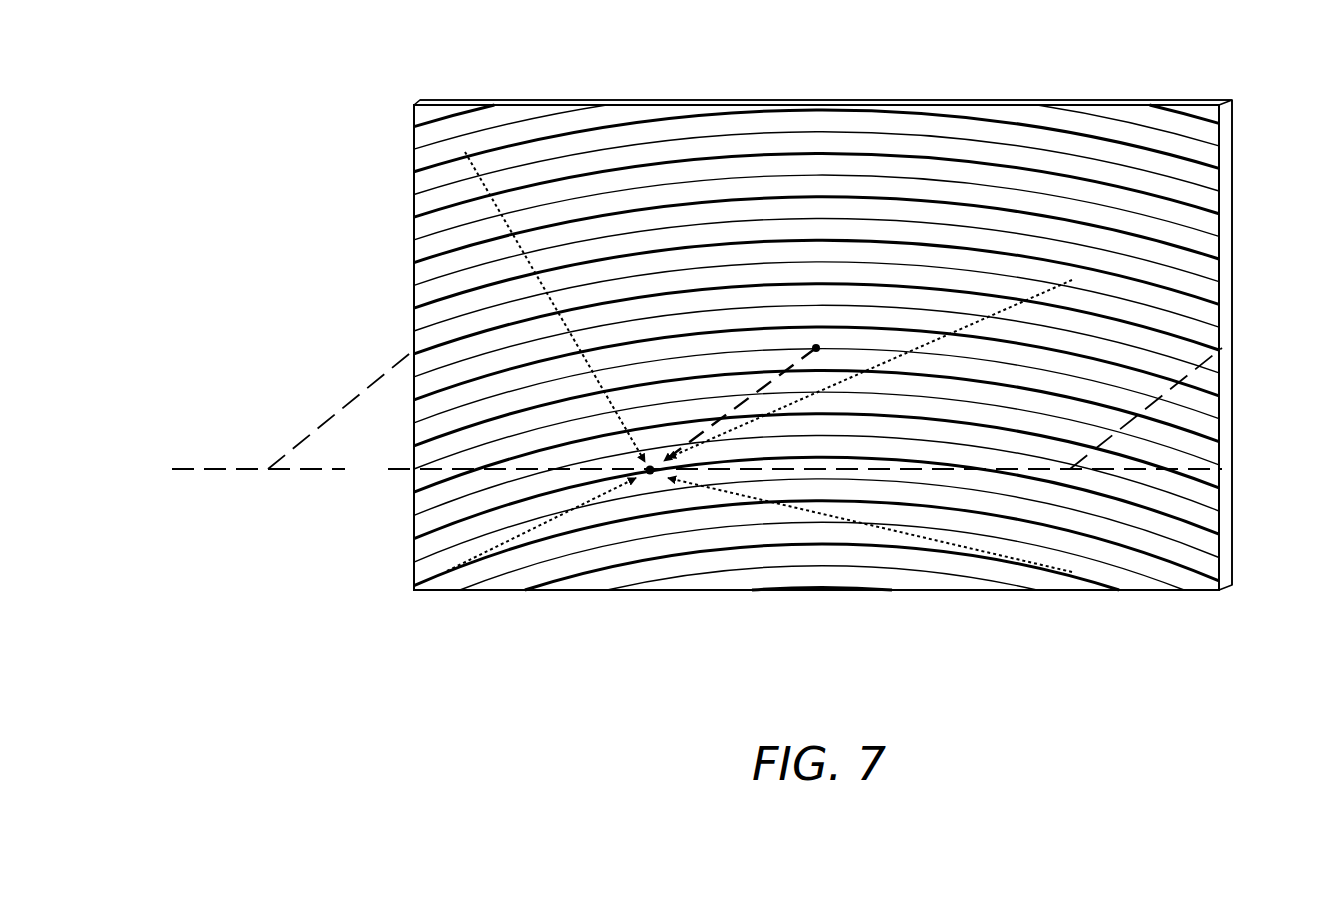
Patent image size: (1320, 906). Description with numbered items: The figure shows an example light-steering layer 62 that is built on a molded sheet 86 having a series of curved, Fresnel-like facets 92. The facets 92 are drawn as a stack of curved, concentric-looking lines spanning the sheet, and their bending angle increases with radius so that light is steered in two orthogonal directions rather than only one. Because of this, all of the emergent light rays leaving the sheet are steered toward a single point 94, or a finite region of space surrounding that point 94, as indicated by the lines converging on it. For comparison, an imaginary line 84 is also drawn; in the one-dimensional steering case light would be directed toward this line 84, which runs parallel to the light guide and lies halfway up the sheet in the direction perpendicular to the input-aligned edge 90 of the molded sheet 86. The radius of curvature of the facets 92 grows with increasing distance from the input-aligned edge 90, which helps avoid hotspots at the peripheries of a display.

The light-steering layer 62 is at (851, 80).
The molded sheet 86 is at (484, 102).
The curved Fresnel-like facets 92 is at (1197, 207).
The input-aligned edge 90 is at (816, 592).
The imaginary line 84 is at (697, 412).
The point 94 is at (759, 362).